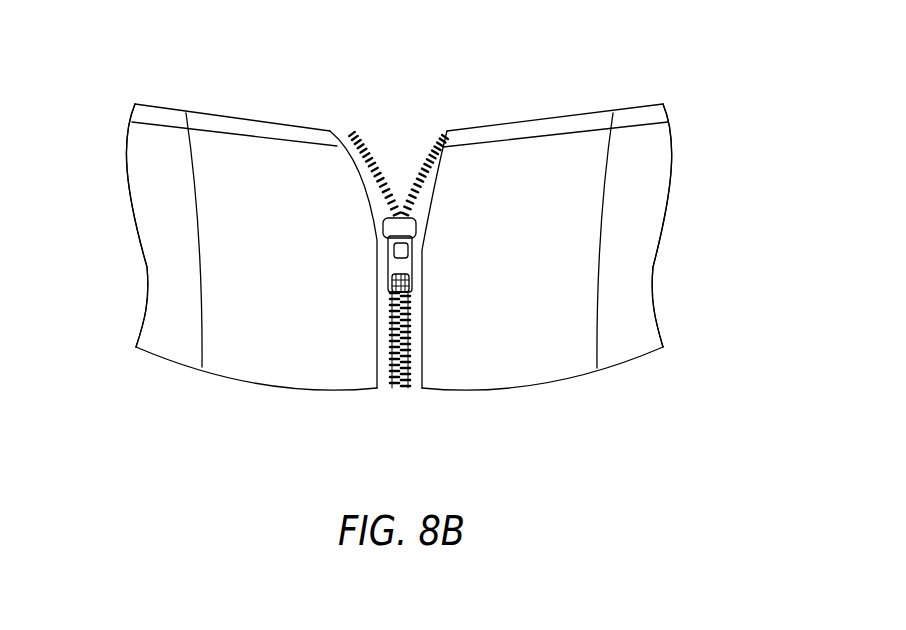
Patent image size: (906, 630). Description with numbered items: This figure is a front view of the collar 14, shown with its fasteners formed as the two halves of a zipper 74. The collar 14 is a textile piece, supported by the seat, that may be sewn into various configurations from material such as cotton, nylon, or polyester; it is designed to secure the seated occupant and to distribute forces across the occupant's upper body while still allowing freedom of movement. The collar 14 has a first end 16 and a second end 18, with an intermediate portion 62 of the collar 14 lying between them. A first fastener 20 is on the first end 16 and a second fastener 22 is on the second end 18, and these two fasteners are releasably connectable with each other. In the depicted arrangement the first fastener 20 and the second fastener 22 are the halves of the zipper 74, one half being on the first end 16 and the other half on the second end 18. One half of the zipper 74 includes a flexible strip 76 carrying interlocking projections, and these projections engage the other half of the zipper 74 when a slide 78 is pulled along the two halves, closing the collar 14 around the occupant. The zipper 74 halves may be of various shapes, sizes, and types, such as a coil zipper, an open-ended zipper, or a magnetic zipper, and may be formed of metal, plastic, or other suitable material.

The collar 14 is at (522, 102).
The first end 16 is at (550, 157).
The second end 18 is at (257, 155).
The first fastener 20 is at (424, 367).
The second fastener 22 is at (376, 367).
The intermediate portion 62 is at (173, 275).
The zipper 74 is at (401, 392).
The flexible strip 76 is at (360, 137).
The slide 78 is at (398, 270).